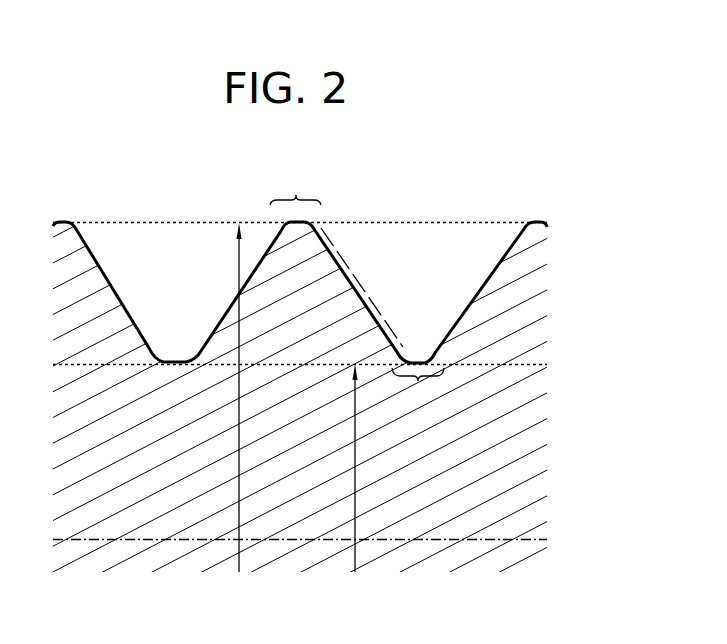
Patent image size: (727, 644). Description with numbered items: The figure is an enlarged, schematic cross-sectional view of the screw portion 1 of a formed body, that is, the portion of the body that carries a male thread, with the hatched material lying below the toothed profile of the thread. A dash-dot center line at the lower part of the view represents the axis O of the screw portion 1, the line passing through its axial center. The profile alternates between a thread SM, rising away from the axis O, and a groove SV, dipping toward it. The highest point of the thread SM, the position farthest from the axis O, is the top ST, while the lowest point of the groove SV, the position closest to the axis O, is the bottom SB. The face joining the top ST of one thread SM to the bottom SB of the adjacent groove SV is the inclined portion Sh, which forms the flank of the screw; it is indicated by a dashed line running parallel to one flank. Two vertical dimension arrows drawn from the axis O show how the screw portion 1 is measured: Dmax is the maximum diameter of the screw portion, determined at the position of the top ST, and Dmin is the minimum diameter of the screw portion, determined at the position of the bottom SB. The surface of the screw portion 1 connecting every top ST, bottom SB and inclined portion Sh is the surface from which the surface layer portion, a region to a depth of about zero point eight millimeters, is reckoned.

The screw portion 1 is at (491, 209).
The axis of the screw portion O is at (527, 531).
The thread SM is at (295, 188).
The top of the thread ST is at (316, 214).
The inclined portion Sh is at (362, 287).
The bottom of the groove SB is at (421, 350).
The groove SV is at (418, 390).
The maximum diameter of the screw portion Dmax is at (259, 397).
The minimum diameter of the screw portion Dmin is at (375, 468).